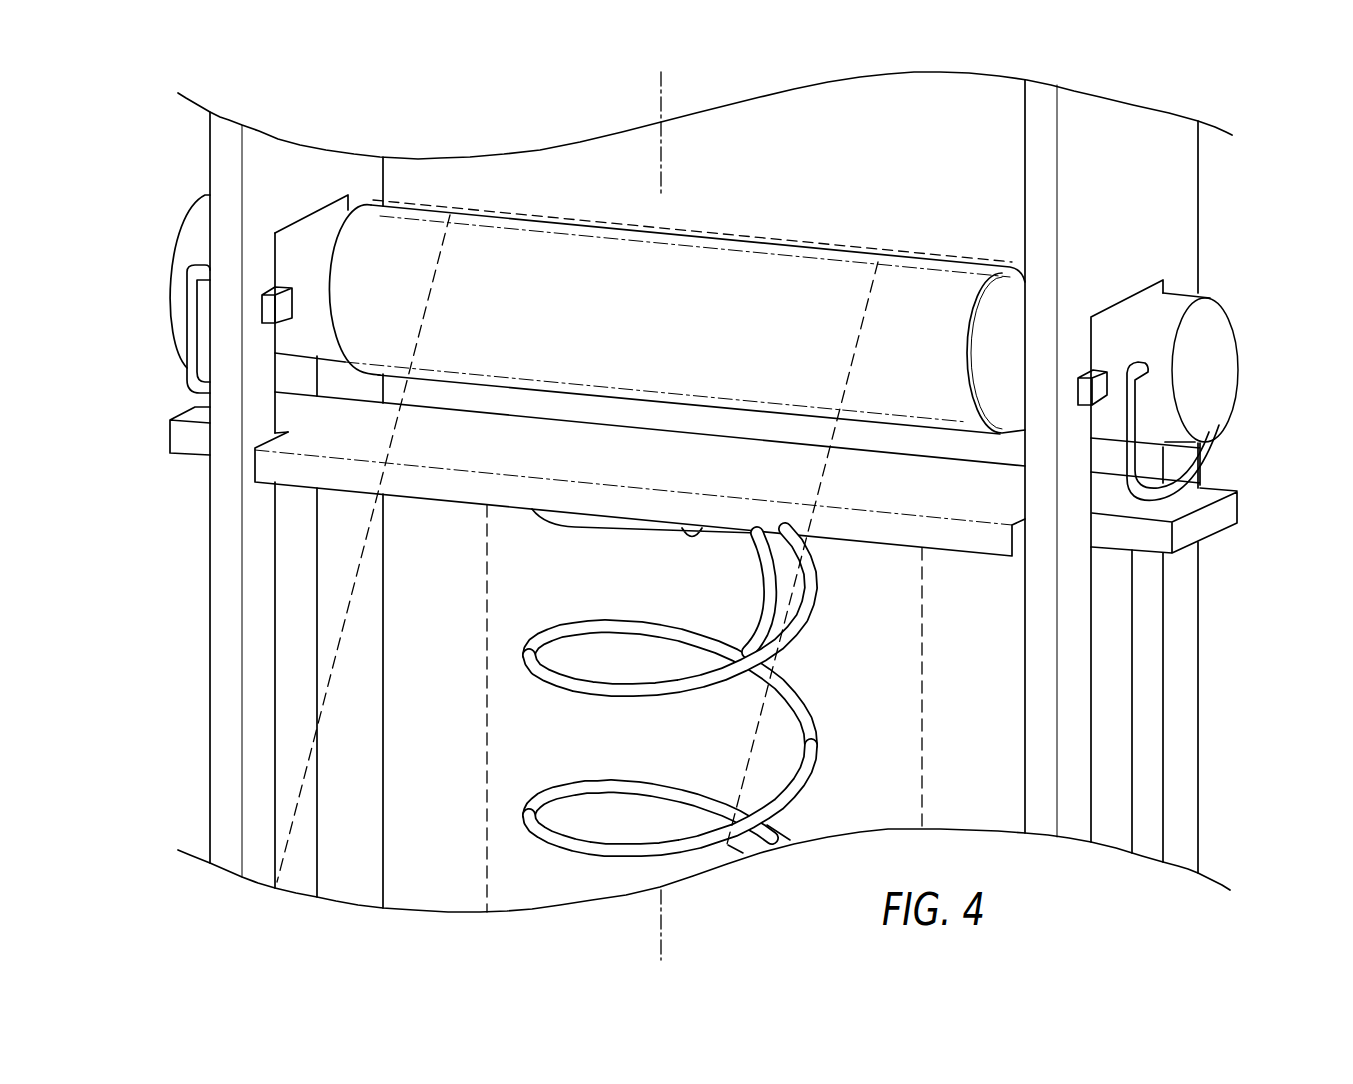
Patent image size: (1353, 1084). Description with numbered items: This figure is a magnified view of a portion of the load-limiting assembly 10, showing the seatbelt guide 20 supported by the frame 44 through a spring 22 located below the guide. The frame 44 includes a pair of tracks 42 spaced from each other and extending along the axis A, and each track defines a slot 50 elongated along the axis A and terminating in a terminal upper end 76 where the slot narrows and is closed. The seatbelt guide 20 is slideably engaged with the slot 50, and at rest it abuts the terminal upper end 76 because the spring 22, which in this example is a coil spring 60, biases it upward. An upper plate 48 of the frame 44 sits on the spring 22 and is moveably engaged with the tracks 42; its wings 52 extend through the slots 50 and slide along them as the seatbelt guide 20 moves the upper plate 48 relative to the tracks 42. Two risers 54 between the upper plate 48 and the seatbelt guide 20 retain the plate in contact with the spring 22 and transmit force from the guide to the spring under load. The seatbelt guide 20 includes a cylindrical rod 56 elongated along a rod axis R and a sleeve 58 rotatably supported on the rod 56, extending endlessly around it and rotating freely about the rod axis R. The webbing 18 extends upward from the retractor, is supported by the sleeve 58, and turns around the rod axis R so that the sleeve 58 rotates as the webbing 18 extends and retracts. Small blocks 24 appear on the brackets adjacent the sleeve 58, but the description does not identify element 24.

The load-limiting assembly 10 is at (1278, 207).
The webbing 18 is at (925, 688).
The seatbelt guide 20 is at (1225, 308).
The spring 22 is at (663, 691).
The coil spring 60 is at (558, 695).
The stop block 24 is at (285, 305).
The tracks 42 is at (249, 722).
The frame 44 is at (1199, 714).
The upper plate 48 is at (298, 475).
The slot 50 is at (300, 690).
The wings 52 is at (175, 432).
The riser 54 is at (183, 362).
The rod 56 is at (177, 260).
The sleeve 58 is at (835, 252).
The terminal upper end 76 is at (1122, 300).
The axis A is at (658, 499).
The rod axis R is at (1205, 377).